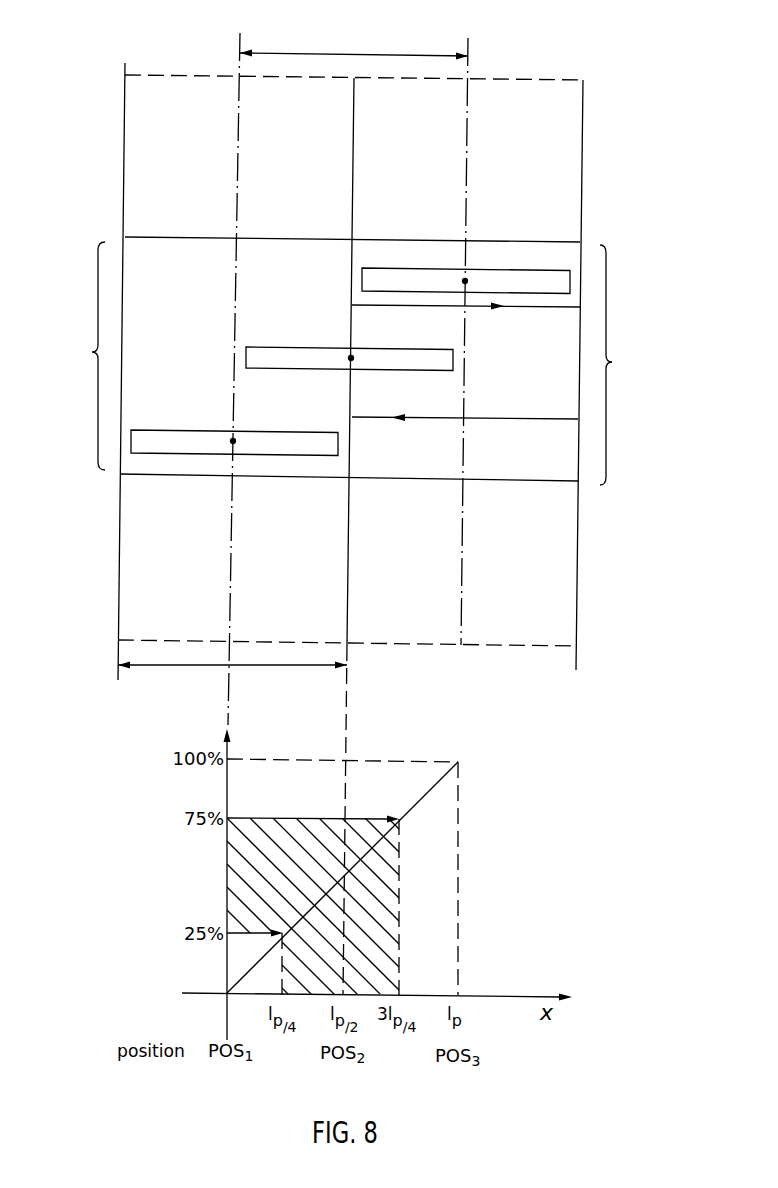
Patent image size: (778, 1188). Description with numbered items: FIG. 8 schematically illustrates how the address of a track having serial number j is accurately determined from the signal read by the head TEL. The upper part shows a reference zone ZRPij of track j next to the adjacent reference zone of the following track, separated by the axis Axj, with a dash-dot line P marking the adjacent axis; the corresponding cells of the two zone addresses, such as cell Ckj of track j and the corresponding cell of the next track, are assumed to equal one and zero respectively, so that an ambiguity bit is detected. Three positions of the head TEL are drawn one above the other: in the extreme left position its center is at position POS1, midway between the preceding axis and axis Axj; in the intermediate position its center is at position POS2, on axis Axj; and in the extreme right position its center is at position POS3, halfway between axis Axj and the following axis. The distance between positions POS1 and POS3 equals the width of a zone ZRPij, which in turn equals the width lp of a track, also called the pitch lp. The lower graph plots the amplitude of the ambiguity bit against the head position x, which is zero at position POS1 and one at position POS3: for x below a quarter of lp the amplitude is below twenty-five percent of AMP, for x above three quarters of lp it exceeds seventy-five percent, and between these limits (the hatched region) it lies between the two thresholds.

The reference zone ZRPij is at (125, 134).
The axis Axj is at (354, 157).
The pitch line P is at (437, 557).
The head TEL is at (360, 280).
The extreme left position POS1 is at (233, 439).
The intermediate position POS2 is at (351, 361).
The extreme right position POS3 is at (465, 279).
The address cell Ckj is at (75, 356).
The track width lp is at (293, 364).